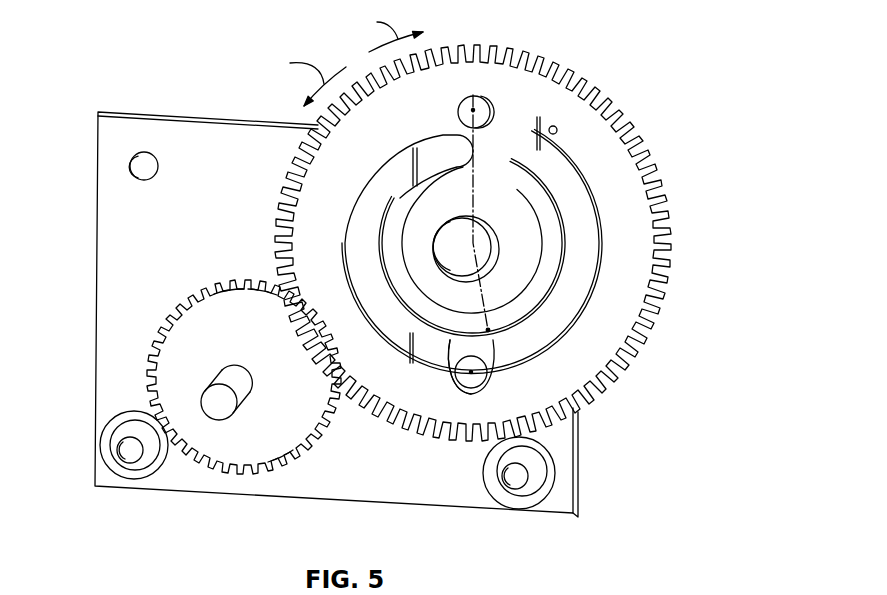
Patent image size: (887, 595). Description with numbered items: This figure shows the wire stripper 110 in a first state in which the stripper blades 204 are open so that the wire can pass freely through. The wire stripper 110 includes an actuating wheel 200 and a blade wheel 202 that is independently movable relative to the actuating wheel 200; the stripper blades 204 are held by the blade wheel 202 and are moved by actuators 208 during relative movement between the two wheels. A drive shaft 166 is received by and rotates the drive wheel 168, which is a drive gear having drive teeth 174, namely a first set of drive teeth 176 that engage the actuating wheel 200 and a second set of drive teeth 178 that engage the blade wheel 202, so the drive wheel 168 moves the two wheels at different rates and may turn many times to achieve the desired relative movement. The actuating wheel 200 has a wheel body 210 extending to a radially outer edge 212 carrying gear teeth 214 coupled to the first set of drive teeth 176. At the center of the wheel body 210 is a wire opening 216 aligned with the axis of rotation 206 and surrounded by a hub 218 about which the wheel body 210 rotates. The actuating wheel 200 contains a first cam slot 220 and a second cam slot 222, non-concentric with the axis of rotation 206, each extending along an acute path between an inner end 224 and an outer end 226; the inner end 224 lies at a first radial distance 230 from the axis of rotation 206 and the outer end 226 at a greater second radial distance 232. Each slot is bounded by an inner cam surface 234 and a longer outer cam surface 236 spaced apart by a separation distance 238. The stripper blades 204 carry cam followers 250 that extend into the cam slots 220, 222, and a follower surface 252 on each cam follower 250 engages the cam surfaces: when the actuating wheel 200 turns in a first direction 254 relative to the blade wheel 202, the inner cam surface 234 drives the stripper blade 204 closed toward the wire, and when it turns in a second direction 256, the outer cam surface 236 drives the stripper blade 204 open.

The wire stripper 110 is at (699, 77).
The drive shaft 166 is at (221, 402).
The drive wheel 168 is at (242, 452).
The drive teeth 174 is at (288, 468).
The first set of drive teeth 176 is at (247, 283).
The second set of drive teeth 178 is at (267, 280).
The actuating wheel 200 is at (583, 352).
The blade wheel 202 is at (667, 243).
The stripper blade 204 is at (517, 117).
The axis of rotation 206 is at (474, 243).
The actuator 208 is at (467, 382).
The wheel body 210 is at (620, 322).
The radially outer edge 212 is at (617, 313).
The gear teeth 214 is at (665, 278).
The wire opening 216 is at (489, 391).
The hub 218 is at (512, 292).
The first cam slot 220 is at (566, 142).
The second cam slot 222 is at (405, 370).
The inner end 224 is at (450, 360).
The outer end 226 is at (467, 97).
The first radial distance 230 is at (483, 297).
The second radial distance 232 is at (473, 203).
The inner cam surface 234 is at (513, 118).
The outer cam surface 236 is at (556, 127).
The separation distance 238 is at (563, 152).
The cam follower 250 is at (486, 99).
The follower surface 252 is at (496, 102).
The first direction 254 is at (298, 80).
The second direction 256 is at (375, 31).